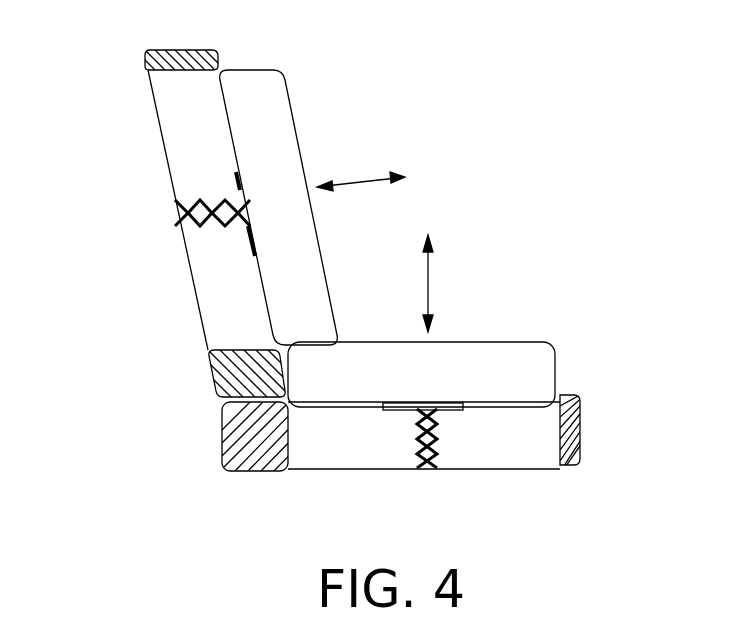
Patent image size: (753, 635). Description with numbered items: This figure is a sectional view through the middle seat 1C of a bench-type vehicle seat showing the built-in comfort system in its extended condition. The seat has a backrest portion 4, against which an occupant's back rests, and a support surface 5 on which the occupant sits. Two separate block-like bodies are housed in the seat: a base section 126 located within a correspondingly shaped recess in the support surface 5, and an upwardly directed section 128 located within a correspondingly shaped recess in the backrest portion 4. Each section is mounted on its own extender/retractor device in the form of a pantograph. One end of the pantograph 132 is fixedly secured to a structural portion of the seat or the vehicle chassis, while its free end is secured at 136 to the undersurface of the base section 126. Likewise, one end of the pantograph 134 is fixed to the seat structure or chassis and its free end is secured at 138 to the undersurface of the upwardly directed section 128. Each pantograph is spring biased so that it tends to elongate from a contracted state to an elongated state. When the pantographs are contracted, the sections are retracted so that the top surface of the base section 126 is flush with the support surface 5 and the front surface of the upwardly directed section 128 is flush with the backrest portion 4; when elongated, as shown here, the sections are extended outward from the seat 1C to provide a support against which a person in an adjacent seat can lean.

The backrest portion 4 is at (220, 57).
The upwardly directed section 128 is at (258, 135).
The securing point of pantograph to upwardly directed section 138 is at (237, 190).
The pantograph 134 is at (180, 219).
The base section 126 is at (478, 368).
The support surface 5 is at (568, 394).
The middle seat 1C is at (594, 390).
The securing point of pantograph to base section 136 is at (390, 410).
The pantograph 132 is at (437, 435).